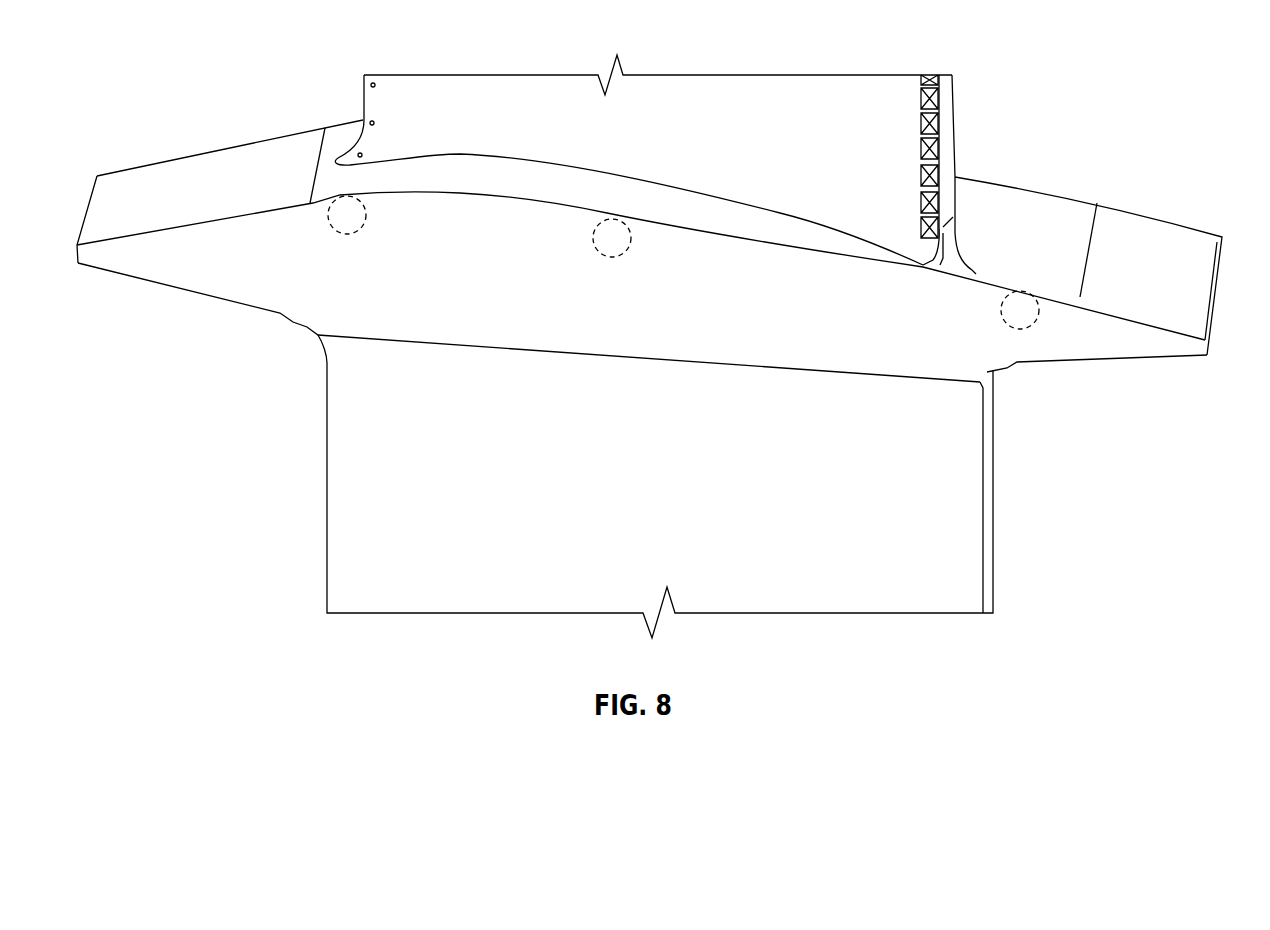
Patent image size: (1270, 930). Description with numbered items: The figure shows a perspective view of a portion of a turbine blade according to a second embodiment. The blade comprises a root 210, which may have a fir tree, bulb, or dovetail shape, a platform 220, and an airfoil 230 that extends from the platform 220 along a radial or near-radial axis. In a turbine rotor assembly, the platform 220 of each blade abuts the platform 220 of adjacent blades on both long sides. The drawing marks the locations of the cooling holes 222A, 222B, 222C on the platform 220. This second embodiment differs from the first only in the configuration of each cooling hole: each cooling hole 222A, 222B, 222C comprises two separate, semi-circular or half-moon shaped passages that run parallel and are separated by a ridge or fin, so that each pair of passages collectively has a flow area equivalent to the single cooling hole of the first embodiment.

The root 210 is at (970, 535).
The platform 220 is at (1183, 238).
The airfoil 230 is at (847, 90).
The cooling hole 222A is at (340, 197).
The cooling hole 222B is at (607, 213).
The cooling hole 222C is at (1013, 287).